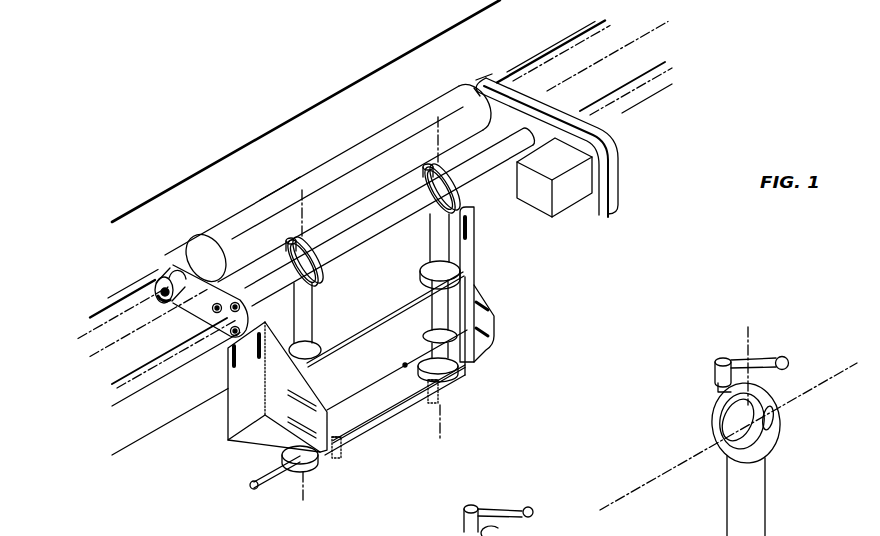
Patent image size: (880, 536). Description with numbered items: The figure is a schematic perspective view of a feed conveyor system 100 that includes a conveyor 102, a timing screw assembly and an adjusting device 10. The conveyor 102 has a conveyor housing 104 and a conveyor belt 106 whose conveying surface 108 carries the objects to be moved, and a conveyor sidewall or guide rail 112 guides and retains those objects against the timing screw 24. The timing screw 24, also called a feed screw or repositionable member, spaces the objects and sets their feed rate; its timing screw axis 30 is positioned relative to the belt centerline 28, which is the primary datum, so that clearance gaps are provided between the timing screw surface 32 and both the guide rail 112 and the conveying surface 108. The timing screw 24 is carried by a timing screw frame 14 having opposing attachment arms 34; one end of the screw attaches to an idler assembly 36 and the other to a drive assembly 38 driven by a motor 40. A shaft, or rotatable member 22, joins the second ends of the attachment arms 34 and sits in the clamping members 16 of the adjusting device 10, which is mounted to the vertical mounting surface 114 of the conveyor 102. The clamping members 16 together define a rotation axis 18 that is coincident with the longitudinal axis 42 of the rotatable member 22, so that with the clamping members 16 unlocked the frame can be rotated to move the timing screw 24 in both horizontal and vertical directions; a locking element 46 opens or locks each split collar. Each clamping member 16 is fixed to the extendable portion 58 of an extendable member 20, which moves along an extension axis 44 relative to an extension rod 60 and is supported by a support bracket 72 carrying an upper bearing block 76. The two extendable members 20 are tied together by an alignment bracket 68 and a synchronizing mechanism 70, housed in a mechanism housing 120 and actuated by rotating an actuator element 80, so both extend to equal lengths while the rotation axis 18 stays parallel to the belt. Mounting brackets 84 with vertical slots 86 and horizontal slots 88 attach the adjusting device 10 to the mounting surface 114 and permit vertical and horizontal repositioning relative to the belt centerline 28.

The adjusting device 10 is at (545, 317).
The timing screw frame 14 is at (632, 172).
The clamping member 16 is at (452, 183).
The rotation axis 18 is at (668, 67).
The extendable member 20 is at (320, 300).
The rotatable member 22 is at (365, 218).
The timing screw 24 is at (347, 146).
The belt centerline 28 is at (636, 43).
The timing screw axis 30 is at (551, 52).
The timing screw surface 32 is at (312, 176).
The attachment arm 34 is at (490, 85).
The idler assembly 36 is at (158, 270).
The drive assembly 38 is at (608, 134).
The motor 40 is at (560, 203).
The longitudinal axis of the rotatable member 42 is at (390, 217).
The extension axis 44 is at (442, 427).
The locking element 46 is at (786, 362).
The extendable portion 58 is at (308, 318).
The extension rod 60 is at (427, 347).
The alignment bracket 68 is at (367, 337).
The synchronizing mechanism 70 is at (390, 438).
The support bracket 72 is at (467, 363).
The upper bearing block 76 is at (420, 271).
The actuator element 80 is at (263, 487).
The mounting bracket 84 is at (228, 417).
The vertical slot 86 is at (228, 370).
The horizontal slot 88 is at (305, 398).
The feed conveyor system 100 is at (236, 104).
The conveyor 102 is at (79, 306).
The conveyor housing 104 is at (652, 140).
The conveyor belt 106 is at (112, 385).
The conveying surface 108 is at (111, 366).
The guide rail 112 is at (290, 116).
The mounting surface 114 is at (497, 217).
The mechanism housing 120 is at (458, 380).